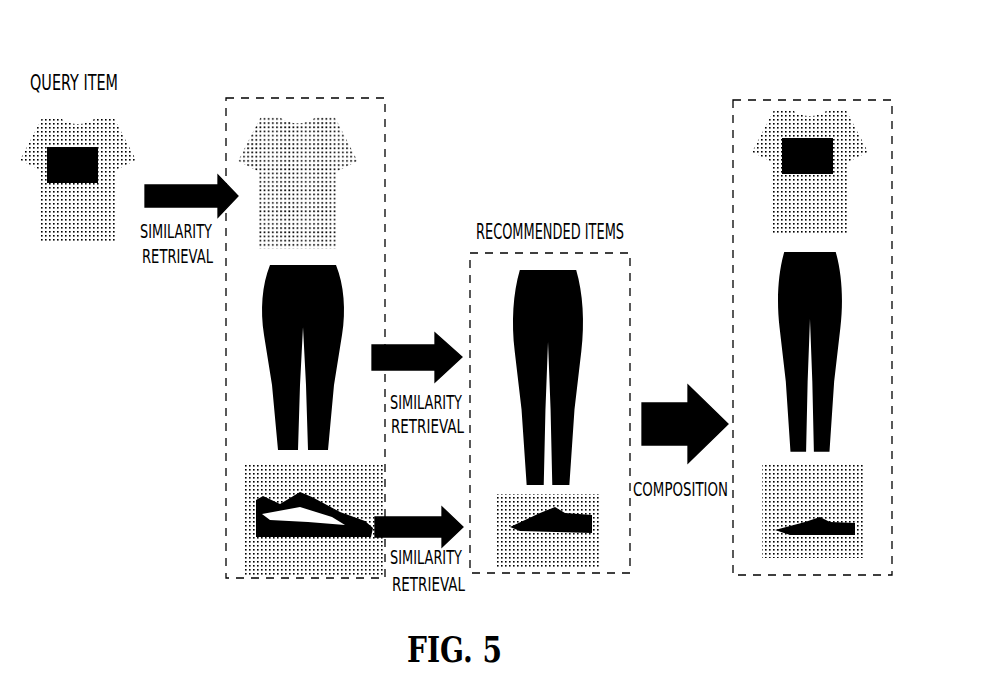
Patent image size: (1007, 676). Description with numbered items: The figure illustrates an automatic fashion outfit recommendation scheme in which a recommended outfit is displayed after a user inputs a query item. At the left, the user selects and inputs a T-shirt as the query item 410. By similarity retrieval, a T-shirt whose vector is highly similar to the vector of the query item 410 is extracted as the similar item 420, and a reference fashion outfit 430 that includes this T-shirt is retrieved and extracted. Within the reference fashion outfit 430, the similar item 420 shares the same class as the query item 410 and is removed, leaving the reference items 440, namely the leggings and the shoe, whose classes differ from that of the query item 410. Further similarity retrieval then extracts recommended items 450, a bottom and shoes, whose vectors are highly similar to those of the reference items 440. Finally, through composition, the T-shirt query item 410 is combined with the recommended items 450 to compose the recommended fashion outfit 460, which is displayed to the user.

The query item 410 is at (103, 137).
The similar item 420 is at (352, 147).
The reference fashion outfit 430 is at (321, 70).
The reference items 440 is at (262, 318).
The recommended items 450 is at (583, 315).
The recommended fashion outfit 460 is at (820, 64).